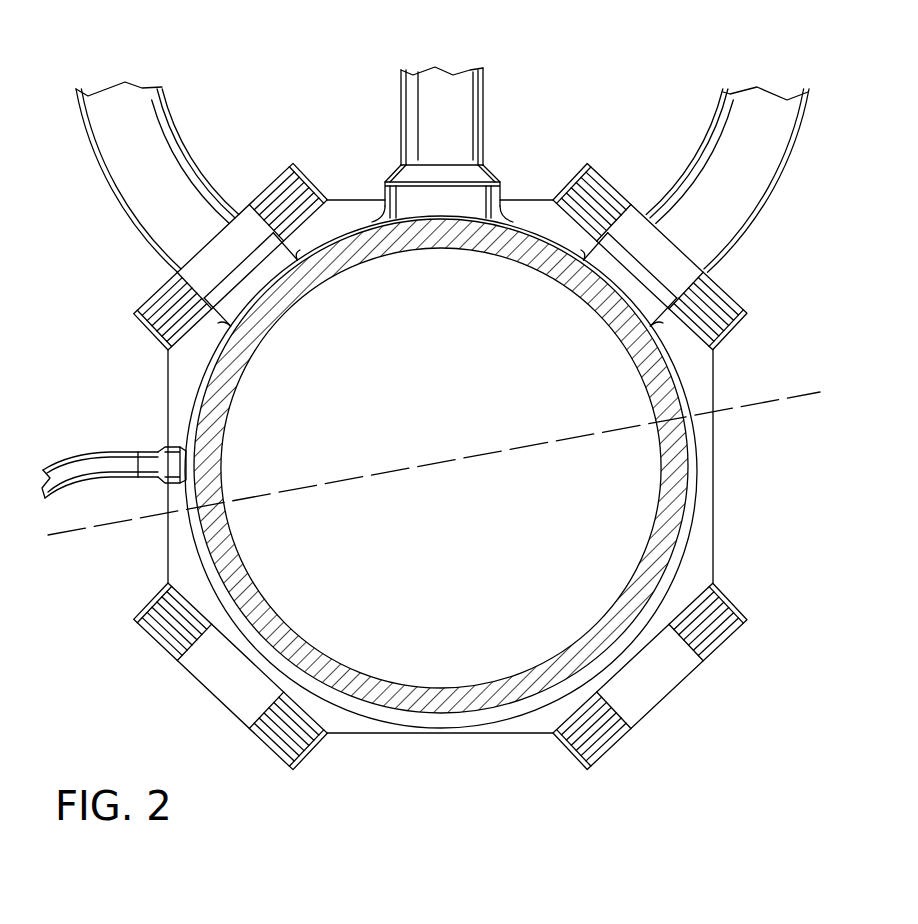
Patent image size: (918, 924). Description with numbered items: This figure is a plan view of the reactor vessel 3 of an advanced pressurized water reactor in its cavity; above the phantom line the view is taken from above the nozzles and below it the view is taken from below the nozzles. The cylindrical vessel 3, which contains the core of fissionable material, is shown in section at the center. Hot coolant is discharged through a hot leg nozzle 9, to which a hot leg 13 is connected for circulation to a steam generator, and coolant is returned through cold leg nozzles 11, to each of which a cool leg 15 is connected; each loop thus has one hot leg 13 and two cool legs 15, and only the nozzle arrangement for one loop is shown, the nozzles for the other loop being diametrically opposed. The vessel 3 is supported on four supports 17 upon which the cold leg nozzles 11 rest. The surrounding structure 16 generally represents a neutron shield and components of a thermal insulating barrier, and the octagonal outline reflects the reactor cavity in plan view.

The reactor vessel 3 is at (648, 372).
The hot leg nozzle 9 is at (440, 177).
The cold leg nozzle 11 is at (665, 268).
The hot leg 13 is at (468, 118).
The cool leg 15 is at (190, 170).
The structure 16 is at (342, 722).
The support 17 is at (157, 298).